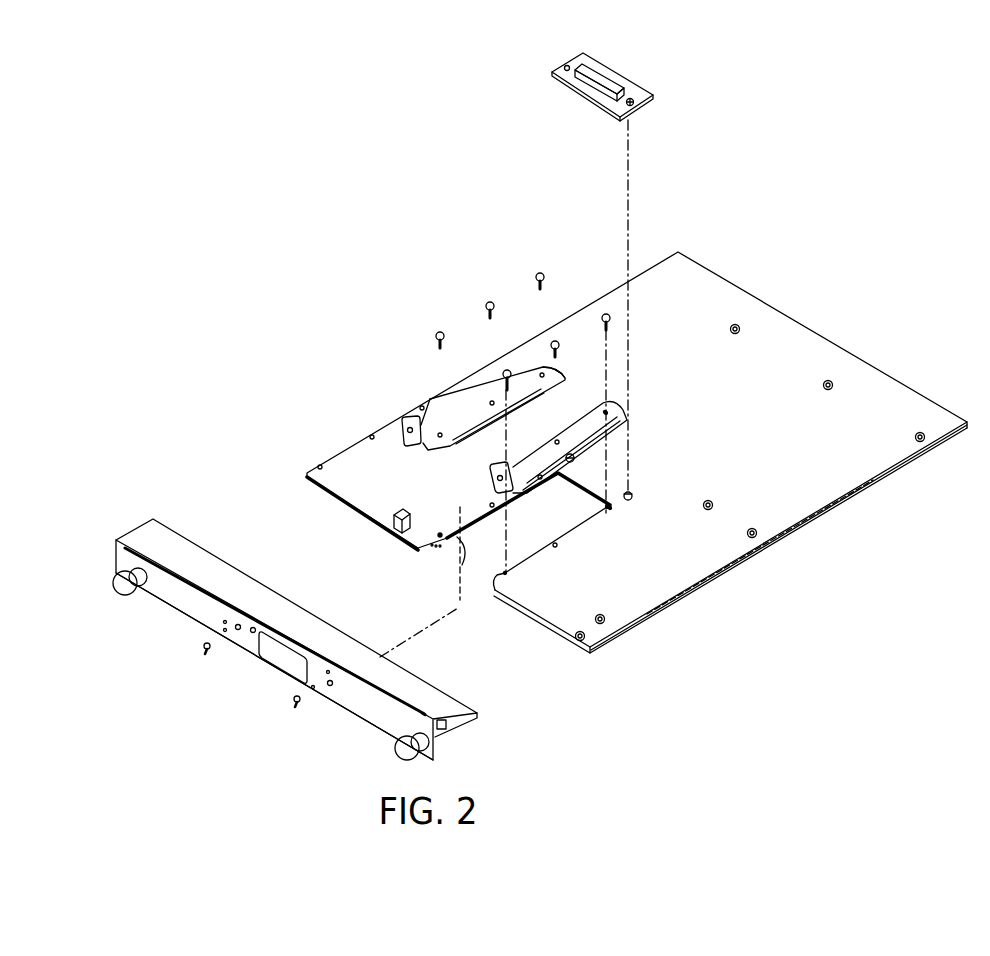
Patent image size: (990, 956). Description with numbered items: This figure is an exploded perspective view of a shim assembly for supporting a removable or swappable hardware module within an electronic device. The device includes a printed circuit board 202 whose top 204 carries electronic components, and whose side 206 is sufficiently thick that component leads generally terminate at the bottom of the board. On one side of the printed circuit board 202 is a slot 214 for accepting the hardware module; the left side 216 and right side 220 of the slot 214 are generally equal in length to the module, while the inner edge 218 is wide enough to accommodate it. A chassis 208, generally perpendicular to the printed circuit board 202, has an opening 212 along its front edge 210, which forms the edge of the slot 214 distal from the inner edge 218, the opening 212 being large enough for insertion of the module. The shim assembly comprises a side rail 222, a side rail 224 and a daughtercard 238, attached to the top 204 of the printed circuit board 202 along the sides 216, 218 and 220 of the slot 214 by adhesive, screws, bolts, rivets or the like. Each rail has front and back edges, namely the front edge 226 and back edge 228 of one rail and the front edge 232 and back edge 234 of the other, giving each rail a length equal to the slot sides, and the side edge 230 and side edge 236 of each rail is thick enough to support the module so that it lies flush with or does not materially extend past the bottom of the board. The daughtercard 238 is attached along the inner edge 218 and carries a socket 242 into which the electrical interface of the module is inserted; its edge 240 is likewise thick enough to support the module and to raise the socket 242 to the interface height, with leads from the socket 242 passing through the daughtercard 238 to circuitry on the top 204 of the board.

The printed circuit board 202 is at (823, 340).
The top of the printed circuit board 204 is at (903, 402).
The side of the printed circuit board 206 is at (890, 472).
The chassis 208 is at (440, 697).
The front edge of the chassis 210 is at (368, 722).
The opening 212 is at (290, 663).
The slot 214 is at (478, 585).
The left side of the slot 216 is at (455, 553).
The inner edge of the slot 218 is at (588, 505).
The right side of the slot 220 is at (520, 563).
The side rail 222 is at (590, 430).
The side rail 224 is at (467, 420).
The front edge of side rail 226 is at (620, 412).
The back edge of side rail 228 is at (493, 481).
The side edge of side rail 230 is at (588, 422).
The front edge of side rail 232 is at (565, 372).
The back edge of side rail 234 is at (410, 444).
The side edge of side rail 236 is at (523, 393).
The daughtercard 238 is at (630, 88).
The edge of the daughtercard 240 is at (643, 108).
The socket 242 is at (600, 66).